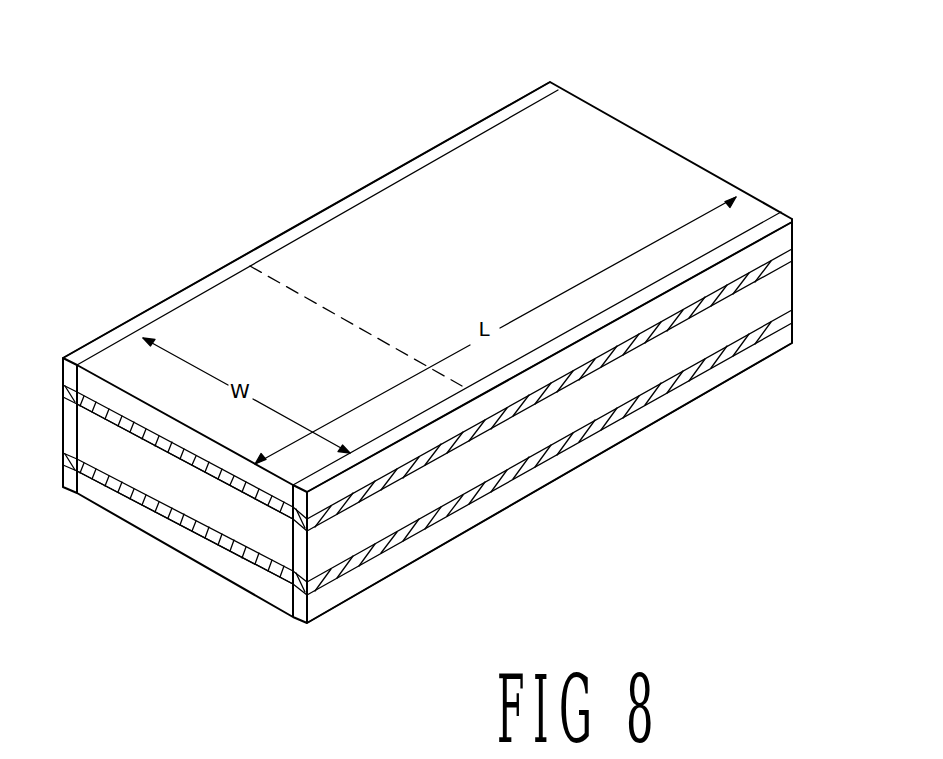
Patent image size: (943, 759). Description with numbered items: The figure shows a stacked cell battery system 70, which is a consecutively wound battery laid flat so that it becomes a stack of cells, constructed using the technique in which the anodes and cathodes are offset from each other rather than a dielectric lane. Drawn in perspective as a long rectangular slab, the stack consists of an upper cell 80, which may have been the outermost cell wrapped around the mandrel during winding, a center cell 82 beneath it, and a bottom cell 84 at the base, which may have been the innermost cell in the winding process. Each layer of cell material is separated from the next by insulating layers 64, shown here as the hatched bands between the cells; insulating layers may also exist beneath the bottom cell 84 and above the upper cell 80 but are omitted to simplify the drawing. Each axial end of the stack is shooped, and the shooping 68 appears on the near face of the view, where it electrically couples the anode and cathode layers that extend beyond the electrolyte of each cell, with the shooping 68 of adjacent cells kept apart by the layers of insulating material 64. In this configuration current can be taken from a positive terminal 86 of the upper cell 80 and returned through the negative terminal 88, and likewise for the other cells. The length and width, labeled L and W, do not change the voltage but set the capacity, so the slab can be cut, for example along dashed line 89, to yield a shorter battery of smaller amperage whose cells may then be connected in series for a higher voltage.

The stacked cell battery system 70 is at (603, 63).
The upper cell 80 is at (494, 244).
The positive terminal 86 is at (180, 164).
The negative terminal 88 is at (530, 380).
The dashed line 89 is at (286, 295).
The insulating layers 64 is at (786, 254).
The shooping 68 is at (783, 233).
The center cell 82 is at (195, 493).
The bottom cell 84 is at (243, 570).